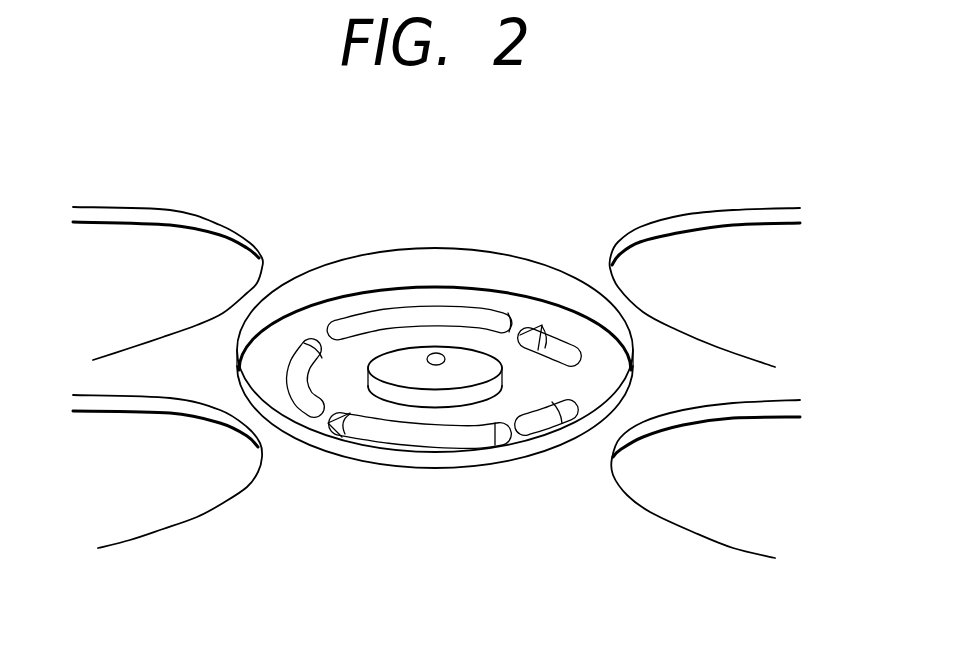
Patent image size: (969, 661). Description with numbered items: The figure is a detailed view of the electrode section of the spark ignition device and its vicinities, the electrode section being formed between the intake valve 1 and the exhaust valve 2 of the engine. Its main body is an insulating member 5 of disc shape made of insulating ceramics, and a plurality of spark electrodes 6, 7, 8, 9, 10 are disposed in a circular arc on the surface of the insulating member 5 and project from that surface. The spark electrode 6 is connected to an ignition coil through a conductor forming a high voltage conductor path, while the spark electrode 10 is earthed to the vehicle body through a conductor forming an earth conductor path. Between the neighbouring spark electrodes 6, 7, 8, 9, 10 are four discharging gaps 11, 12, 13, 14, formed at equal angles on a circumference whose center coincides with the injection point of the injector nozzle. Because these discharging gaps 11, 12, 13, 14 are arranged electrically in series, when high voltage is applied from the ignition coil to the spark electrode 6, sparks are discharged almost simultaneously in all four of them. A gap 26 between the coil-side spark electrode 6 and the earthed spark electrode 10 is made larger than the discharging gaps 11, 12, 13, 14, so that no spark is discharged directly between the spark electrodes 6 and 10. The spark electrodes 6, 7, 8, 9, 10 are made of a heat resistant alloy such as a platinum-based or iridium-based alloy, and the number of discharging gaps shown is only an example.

The intake valve 1 is at (725, 238).
The exhaust valve 2 is at (127, 215).
The insulating member 5 is at (383, 273).
The spark electrode 6 is at (565, 343).
The spark electrode 7 is at (440, 317).
The spark electrode 8 is at (293, 377).
The spark electrode 9 is at (388, 438).
The spark electrode 10 is at (543, 425).
The discharging gap 11 is at (517, 325).
The discharging gap 12 is at (320, 337).
The discharging gap 13 is at (323, 418).
The discharging gap 14 is at (517, 437).
The gap 26 is at (580, 387).